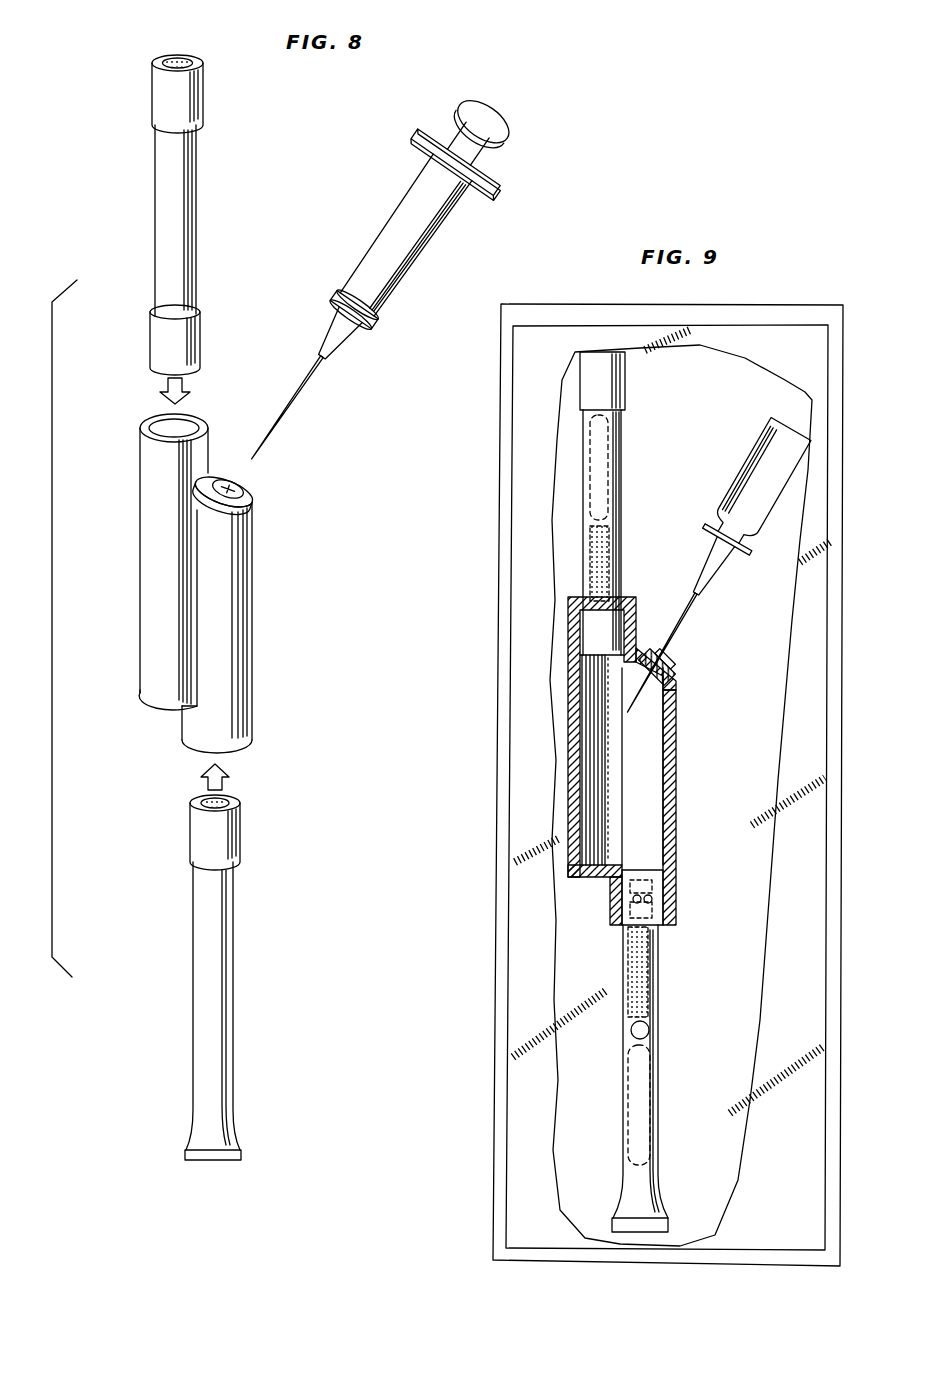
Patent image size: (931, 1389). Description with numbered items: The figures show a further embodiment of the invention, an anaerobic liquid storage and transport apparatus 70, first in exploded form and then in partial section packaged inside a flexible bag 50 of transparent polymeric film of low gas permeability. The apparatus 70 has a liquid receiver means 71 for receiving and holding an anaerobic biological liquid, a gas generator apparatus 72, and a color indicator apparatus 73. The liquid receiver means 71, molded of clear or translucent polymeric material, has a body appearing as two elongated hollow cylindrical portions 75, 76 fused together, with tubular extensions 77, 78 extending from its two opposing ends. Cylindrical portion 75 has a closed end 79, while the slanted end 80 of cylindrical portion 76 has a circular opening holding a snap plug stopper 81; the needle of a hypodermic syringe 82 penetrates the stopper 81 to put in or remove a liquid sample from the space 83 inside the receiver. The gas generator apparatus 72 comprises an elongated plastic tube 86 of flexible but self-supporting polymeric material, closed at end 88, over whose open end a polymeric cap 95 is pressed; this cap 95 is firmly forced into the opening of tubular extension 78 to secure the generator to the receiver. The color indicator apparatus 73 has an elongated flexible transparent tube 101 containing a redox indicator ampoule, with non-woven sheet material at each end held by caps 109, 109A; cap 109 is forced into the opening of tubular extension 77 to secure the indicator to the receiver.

In FIG. 9, the bag 50 is at (499, 540).
In FIG. 8, the anaerobic liquid storage and transport apparatus 70 is at (305, 611).
In FIG. 9, the anaerobic liquid storage and transport apparatus 70 is at (637, 792).
In FIG. 8, the liquid receiver means 71 is at (189, 577).
In FIG. 9, the liquid receiver means 71 is at (622, 752).
In FIG. 8, the gas generator apparatus 72 is at (221, 981).
In FIG. 9, the gas generator apparatus 72 is at (648, 1051).
In FIG. 8, the color indicator apparatus 73 is at (182, 215).
In FIG. 9, the color indicator apparatus 73 is at (609, 608).
In FIG. 8, the cylindrical portion 75 is at (178, 552).
In FIG. 8, the cylindrical portion 76 is at (240, 655).
In FIG. 8, the tubular extension 77 is at (205, 442).
In FIG. 9, the tubular extension 77 is at (640, 606).
In FIG. 8, the tubular extension 78 is at (185, 731).
In FIG. 9, the tubular extension 78 is at (626, 908).
In FIG. 8, the closed end 79 is at (152, 701).
In FIG. 9, the closed end 79 is at (592, 880).
In FIG. 8, the slanted end 80 is at (201, 496).
In FIG. 9, the slanted end 80 is at (676, 683).
In FIG. 8, the snap plug stopper 81 is at (249, 499).
In FIG. 9, the snap plug stopper 81 is at (673, 666).
In FIG. 8, the hypodermic syringe 82 is at (357, 238).
In FIG. 9, the hypodermic syringe 82 is at (731, 476).
In FIG. 9, the space 83 is at (650, 784).
In FIG. 8, the elongated plastic tube 86 is at (193, 1014).
In FIG. 9, the elongated plastic tube 86 is at (625, 1063).
In FIG. 8, the closed end 88 is at (240, 1160).
In FIG. 9, the closed end 88 is at (660, 1226).
In FIG. 8, the polymeric cap 95 is at (240, 829).
In FIG. 9, the polymeric cap 95 is at (622, 900).
In FIG. 8, the elongated flexible transparent tube 101 is at (153, 211).
In FIG. 9, the elongated flexible transparent tube 101 is at (621, 498).
In FIG. 8, the cap 109 is at (201, 330).
In FIG. 9, the cap 109 is at (590, 640).
In FIG. 8, the cap 109A is at (204, 99).
In FIG. 9, the cap 109A is at (628, 384).